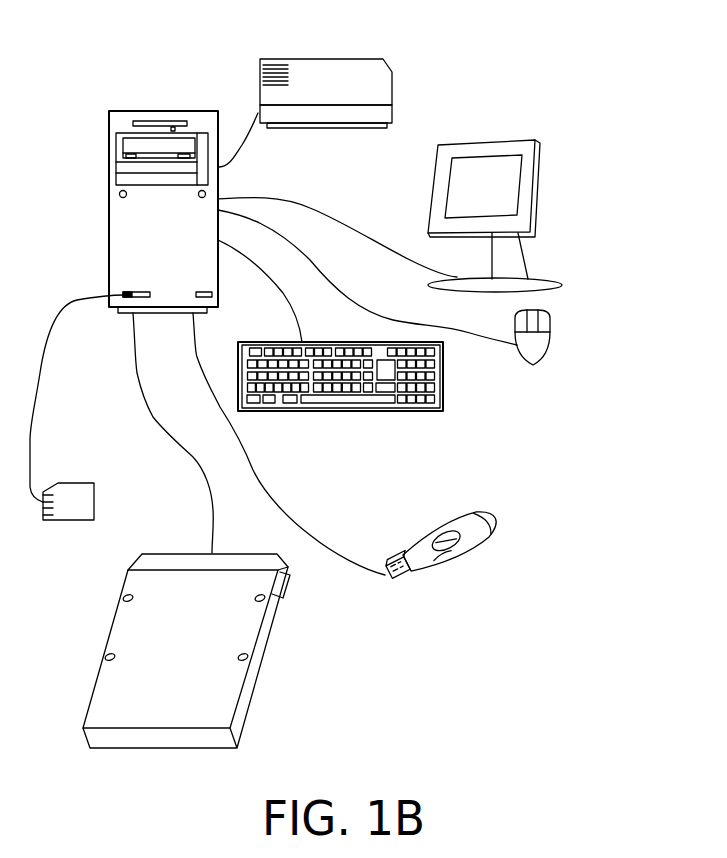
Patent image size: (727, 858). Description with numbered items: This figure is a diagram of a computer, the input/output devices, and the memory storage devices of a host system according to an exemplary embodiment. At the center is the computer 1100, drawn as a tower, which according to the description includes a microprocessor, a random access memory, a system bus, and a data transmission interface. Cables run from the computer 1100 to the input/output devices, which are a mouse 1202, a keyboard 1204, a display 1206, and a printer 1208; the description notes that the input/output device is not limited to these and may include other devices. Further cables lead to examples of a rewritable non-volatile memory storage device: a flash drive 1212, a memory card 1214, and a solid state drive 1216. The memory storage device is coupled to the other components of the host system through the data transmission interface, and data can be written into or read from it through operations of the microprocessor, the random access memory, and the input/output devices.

The computer 1100 is at (165, 110).
The mouse 1202 is at (548, 343).
The keyboard 1204 is at (443, 388).
The display 1206 is at (498, 135).
The printer 1208 is at (322, 58).
The flash drive 1212 is at (437, 537).
The memory card 1214 is at (95, 492).
The solid state drive (SSD) 1216 is at (238, 538).